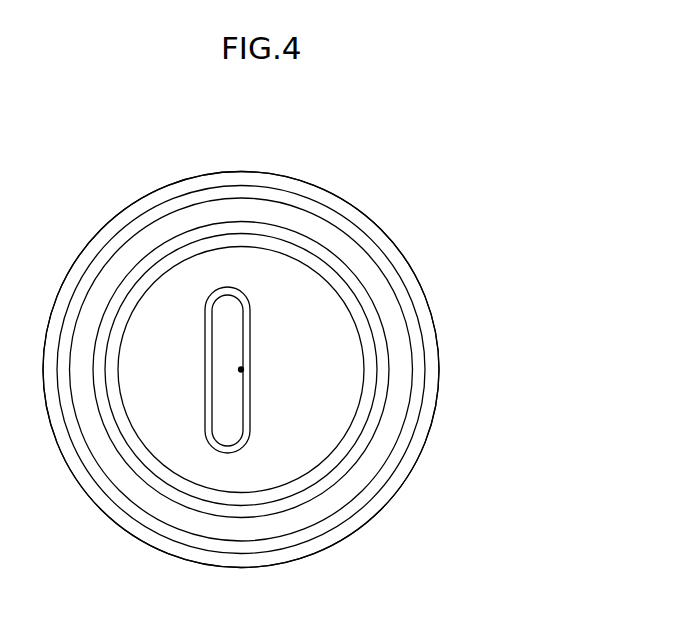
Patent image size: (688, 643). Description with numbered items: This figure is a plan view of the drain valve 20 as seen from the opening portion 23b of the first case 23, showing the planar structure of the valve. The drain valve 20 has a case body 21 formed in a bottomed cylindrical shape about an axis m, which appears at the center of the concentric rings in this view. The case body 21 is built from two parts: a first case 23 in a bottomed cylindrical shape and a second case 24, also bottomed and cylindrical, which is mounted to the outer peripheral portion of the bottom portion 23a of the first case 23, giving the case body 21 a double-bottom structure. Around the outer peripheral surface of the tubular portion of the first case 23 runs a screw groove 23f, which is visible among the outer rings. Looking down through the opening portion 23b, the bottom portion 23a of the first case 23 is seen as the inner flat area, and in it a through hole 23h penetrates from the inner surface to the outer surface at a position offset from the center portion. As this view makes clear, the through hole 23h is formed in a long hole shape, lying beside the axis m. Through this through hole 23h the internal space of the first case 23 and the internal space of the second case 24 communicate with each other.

The drain valve 20 is at (402, 222).
The case body 21 is at (207, 171).
The second case 24 is at (442, 360).
The screw groove 23f is at (325, 218).
The first case 23 is at (395, 320).
The opening portion 23b is at (365, 355).
The bottom portion 23a is at (265, 398).
The through hole 23h is at (214, 358).
The axis m is at (242, 370).